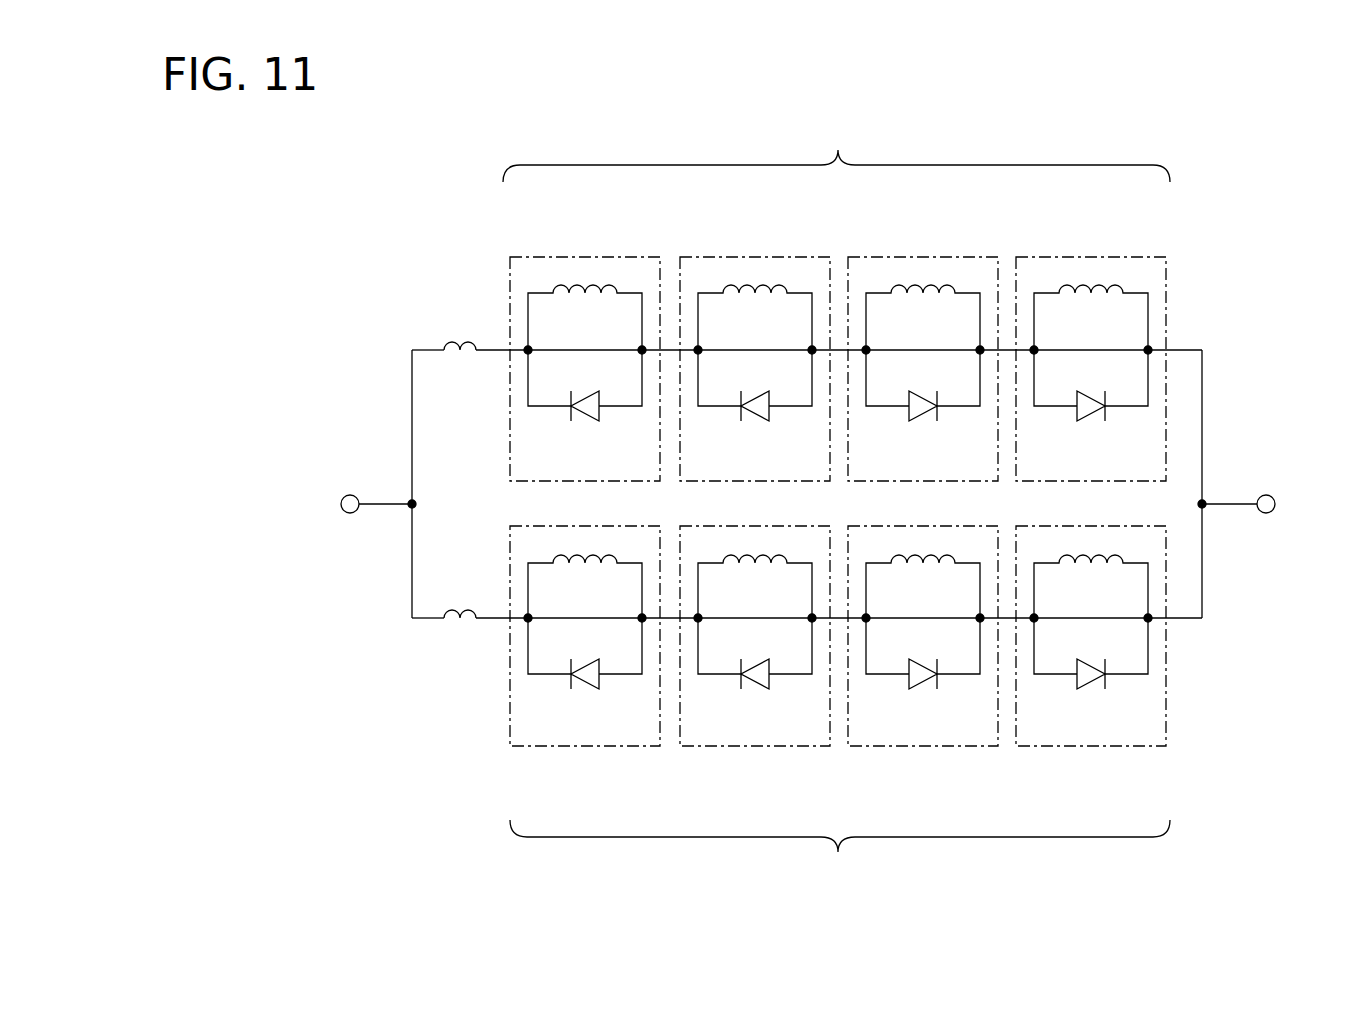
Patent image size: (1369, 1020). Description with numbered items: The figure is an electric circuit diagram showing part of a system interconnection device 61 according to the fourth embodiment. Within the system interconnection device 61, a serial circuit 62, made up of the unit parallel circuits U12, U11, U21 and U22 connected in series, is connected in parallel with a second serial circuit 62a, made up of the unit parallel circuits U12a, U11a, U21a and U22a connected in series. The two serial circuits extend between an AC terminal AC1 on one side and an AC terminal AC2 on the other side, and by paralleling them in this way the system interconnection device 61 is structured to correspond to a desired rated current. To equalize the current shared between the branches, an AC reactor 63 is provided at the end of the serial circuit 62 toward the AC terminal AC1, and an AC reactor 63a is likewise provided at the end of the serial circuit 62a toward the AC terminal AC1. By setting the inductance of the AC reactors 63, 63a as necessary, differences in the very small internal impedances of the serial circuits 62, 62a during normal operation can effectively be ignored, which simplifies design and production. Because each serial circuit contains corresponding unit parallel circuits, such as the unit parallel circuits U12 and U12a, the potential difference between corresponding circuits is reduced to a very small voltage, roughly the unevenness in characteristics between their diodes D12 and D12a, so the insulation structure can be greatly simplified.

The system interconnection device 61 is at (455, 181).
The serial circuit 62 is at (836, 301).
The serial circuit 62a is at (840, 709).
The AC reactor 63 is at (458, 343).
The AC reactor 63a is at (460, 611).
The AC terminal AC1 is at (341, 501).
The AC terminal AC2 is at (1276, 501).
The unit parallel circuit U12 is at (585, 257).
The unit parallel circuit U11 is at (755, 257).
The unit parallel circuit U21 is at (923, 257).
The unit parallel circuit U22 is at (1093, 257).
The unit parallel circuit U12a is at (585, 746).
The unit parallel circuit U11a is at (755, 746).
The unit parallel circuit U21a is at (923, 746).
The unit parallel circuit U22a is at (1093, 746).
The diode D12 is at (588, 422).
The diode D12a is at (598, 680).